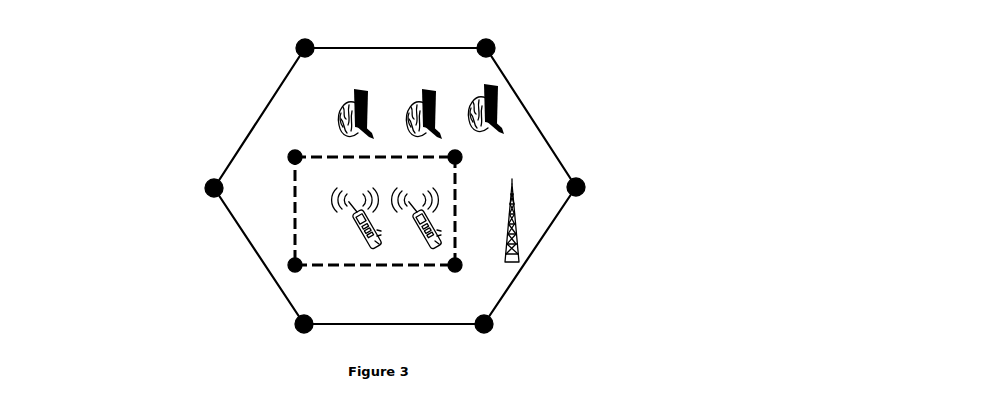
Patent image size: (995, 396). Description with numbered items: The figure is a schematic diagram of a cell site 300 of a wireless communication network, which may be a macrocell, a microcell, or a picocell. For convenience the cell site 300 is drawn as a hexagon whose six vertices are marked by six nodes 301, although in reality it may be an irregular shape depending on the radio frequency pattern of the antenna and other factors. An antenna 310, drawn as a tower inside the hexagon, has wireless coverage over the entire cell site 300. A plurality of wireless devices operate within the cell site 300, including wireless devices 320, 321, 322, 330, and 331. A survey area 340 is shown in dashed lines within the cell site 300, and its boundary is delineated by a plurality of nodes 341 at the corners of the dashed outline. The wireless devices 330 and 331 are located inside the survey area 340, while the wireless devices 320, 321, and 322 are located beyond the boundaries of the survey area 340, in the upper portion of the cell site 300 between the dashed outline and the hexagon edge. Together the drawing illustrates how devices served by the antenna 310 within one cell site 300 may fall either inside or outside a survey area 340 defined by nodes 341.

The cell site 300 is at (536, 118).
The node 301 is at (296, 48).
The antenna 310 is at (506, 260).
The wireless device 320 is at (353, 91).
The wireless device 321 is at (423, 91).
The wireless device 322 is at (490, 88).
The wireless device 330 is at (350, 189).
The wireless device 331 is at (410, 189).
The survey area 340 is at (290, 213).
The node 341 is at (288, 154).